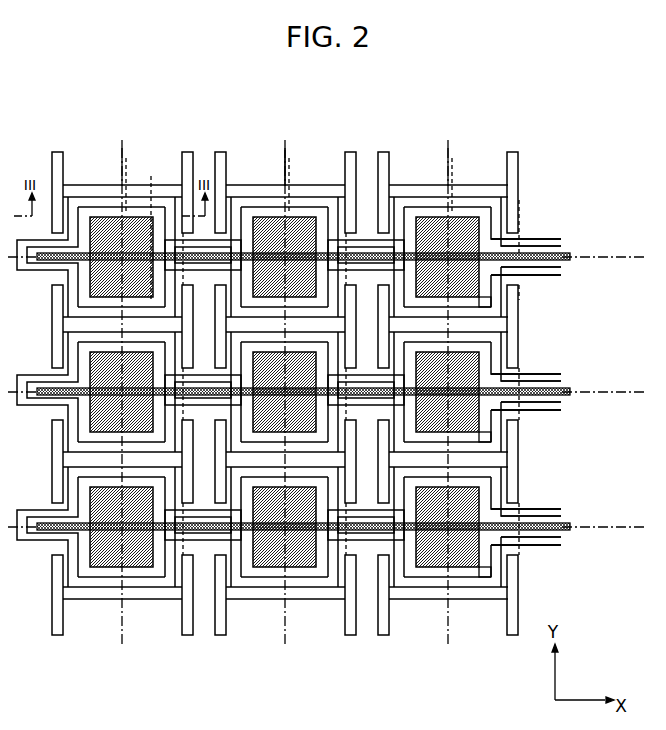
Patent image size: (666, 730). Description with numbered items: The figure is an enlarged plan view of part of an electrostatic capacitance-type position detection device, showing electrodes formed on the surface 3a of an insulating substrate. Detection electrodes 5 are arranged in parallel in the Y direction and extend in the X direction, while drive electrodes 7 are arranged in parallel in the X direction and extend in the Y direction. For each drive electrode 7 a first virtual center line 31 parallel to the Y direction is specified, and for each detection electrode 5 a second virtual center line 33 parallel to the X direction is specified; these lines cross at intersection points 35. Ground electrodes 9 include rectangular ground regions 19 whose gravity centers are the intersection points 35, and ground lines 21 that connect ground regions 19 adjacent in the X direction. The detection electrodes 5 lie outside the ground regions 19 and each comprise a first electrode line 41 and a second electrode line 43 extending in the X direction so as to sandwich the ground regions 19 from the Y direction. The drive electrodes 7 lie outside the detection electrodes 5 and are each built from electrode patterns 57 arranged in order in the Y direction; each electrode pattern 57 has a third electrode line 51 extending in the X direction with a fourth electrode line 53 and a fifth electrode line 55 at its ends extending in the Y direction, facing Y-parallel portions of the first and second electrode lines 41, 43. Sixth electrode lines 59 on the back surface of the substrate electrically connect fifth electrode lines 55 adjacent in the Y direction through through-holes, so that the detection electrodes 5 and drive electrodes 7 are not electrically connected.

The surface 3a is at (560, 200).
The detection electrode 5 is at (606, 300).
The drive electrode 7 is at (133, 141).
The ground electrode 9 is at (480, 284).
The ground region 19 is at (62, 265).
The ground line 21 is at (381, 151).
The first virtual center line 31 is at (128, 160).
The second virtual center line 33 is at (326, 366).
The intersection point 35 is at (102, 218).
The first electrode line 41 is at (568, 250).
The second electrode line 43 is at (560, 275).
The third electrode line 51 is at (274, 168).
The fourth electrode line 53 is at (222, 150).
The fifth electrode line 55 is at (350, 150).
The electrode pattern 57 is at (207, 161).
The sixth electrode line 59 is at (152, 215).